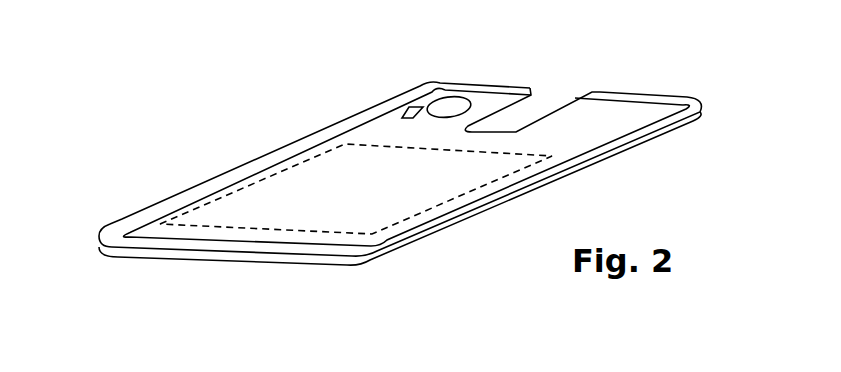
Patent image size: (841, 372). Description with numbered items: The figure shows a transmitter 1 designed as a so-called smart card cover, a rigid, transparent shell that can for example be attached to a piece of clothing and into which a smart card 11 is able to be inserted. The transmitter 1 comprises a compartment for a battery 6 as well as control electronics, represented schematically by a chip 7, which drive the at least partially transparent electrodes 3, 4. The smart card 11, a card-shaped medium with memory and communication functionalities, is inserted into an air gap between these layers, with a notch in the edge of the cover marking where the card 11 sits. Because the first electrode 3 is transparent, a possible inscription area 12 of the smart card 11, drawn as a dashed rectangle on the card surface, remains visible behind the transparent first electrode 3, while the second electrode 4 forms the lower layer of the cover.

The transmitter 1 is at (186, 159).
The first electrode 3 is at (642, 105).
The electrode 4 is at (527, 193).
The battery 6 is at (452, 108).
The chip 7 is at (398, 113).
The smart card 11 is at (527, 110).
The inscription area 12 is at (227, 212).